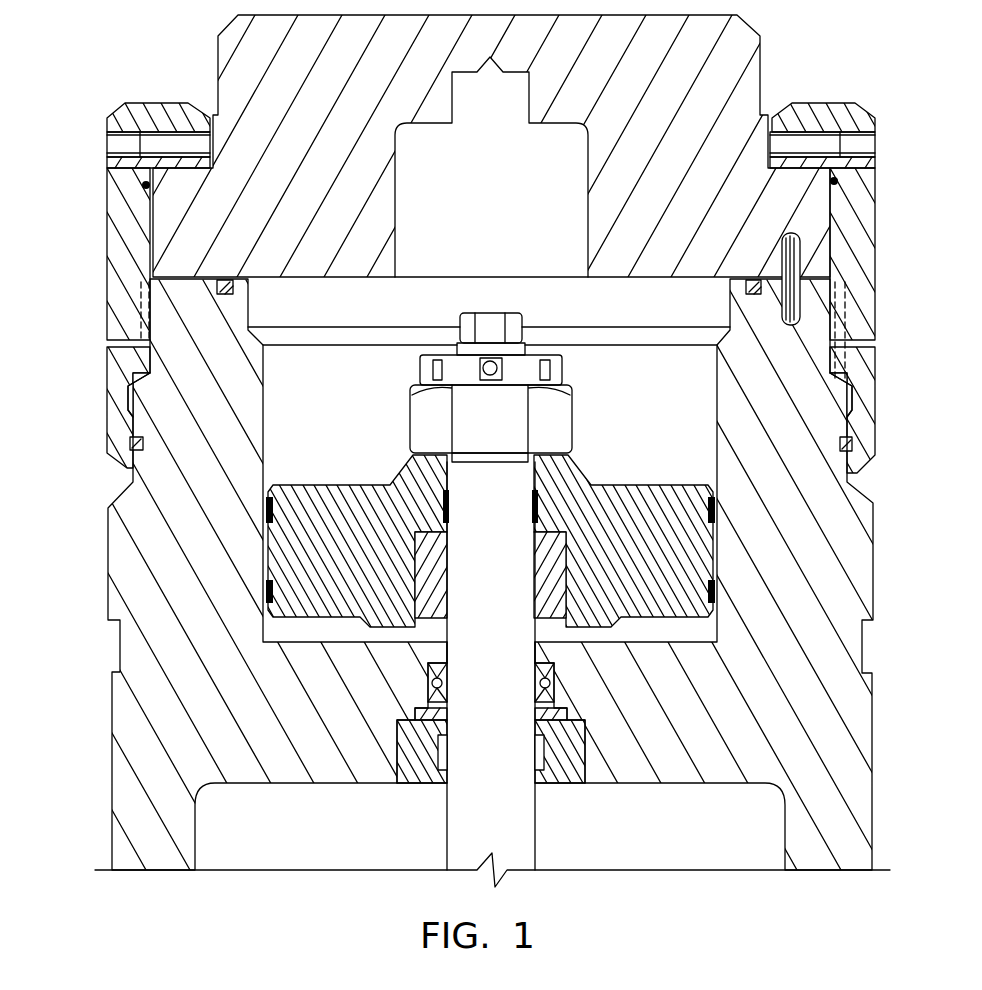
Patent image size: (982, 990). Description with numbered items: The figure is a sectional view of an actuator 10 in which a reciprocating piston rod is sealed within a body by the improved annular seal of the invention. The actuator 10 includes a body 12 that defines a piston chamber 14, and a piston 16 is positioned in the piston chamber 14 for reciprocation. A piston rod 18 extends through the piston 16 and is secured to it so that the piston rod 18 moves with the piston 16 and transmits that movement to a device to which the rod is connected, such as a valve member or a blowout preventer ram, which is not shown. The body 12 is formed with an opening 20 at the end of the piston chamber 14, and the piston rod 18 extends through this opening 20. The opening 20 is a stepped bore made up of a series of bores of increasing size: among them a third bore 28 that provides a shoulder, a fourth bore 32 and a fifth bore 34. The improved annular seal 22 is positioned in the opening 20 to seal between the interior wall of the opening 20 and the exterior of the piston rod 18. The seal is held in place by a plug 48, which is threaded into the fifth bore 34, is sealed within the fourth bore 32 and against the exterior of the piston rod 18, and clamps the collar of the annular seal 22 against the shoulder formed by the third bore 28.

The actuator 10 is at (456, 467).
The body 12 is at (107, 530).
The piston chamber 14 is at (352, 420).
The piston 16 is at (595, 483).
The piston rod 18 is at (533, 853).
The opening 20 is at (535, 655).
The annular seal 22 is at (526, 670).
The third bore 28 is at (437, 713).
The fourth bore 32 is at (402, 743).
The fifth bore 34 is at (403, 783).
The plug 48 is at (550, 783).